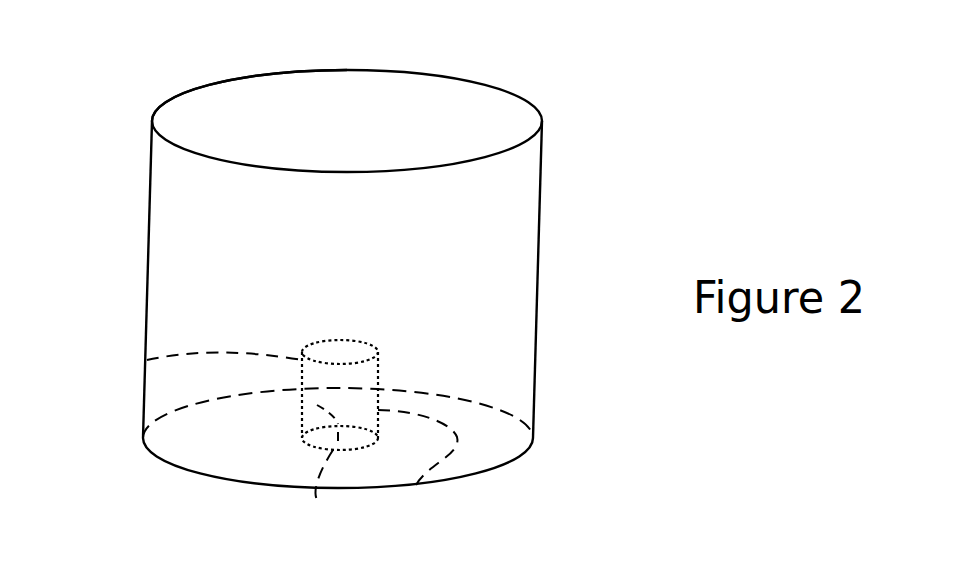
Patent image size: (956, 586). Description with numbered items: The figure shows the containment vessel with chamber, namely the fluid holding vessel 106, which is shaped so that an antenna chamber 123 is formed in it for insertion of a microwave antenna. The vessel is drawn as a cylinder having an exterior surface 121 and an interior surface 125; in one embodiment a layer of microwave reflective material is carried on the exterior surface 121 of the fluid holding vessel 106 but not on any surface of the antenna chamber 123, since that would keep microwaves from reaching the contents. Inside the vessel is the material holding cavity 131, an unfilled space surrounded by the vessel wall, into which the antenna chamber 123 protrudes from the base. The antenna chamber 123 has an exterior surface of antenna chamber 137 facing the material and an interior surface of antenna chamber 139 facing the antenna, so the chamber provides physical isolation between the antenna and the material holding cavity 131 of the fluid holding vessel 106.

The fluid holding vessel 106 is at (510, 76).
The exterior surface 121 is at (453, 285).
The antenna chamber 123 is at (145, 362).
The interior surface 125 is at (412, 139).
The material holding cavity 131 is at (212, 105).
The exterior surface of antenna chamber 137 is at (418, 493).
The interior surface of antenna chamber 139 is at (318, 500).